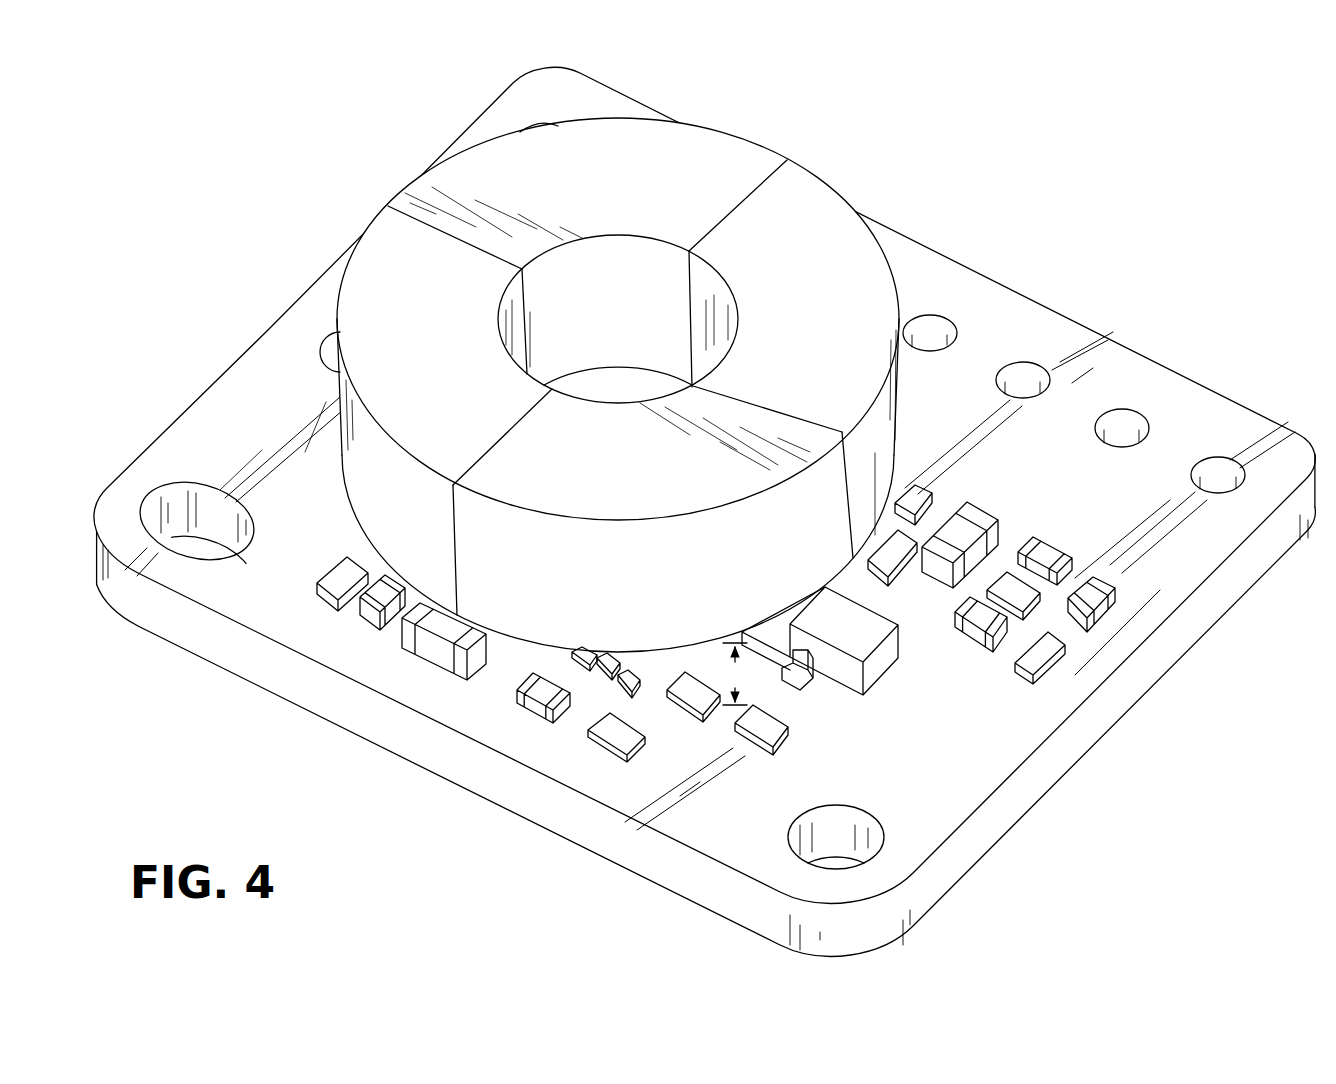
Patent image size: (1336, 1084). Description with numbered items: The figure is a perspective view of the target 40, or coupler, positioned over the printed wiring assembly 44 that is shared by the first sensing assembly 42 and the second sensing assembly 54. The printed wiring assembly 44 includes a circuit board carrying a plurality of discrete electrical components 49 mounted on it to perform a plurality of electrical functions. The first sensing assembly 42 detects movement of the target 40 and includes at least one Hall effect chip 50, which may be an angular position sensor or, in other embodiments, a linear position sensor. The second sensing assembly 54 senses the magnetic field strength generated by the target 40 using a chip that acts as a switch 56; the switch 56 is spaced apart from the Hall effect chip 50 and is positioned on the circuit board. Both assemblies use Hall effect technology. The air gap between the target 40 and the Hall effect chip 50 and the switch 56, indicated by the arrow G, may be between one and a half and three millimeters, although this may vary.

The target 40 is at (778, 245).
The first sensing assembly 42 is at (445, 120).
The printed wiring assembly 44 is at (133, 413).
The discrete electrical components 49 is at (1017, 505).
The Hall effect chip 50 is at (620, 390).
The second sensing assembly 54 is at (757, 774).
The switch 56 is at (880, 668).